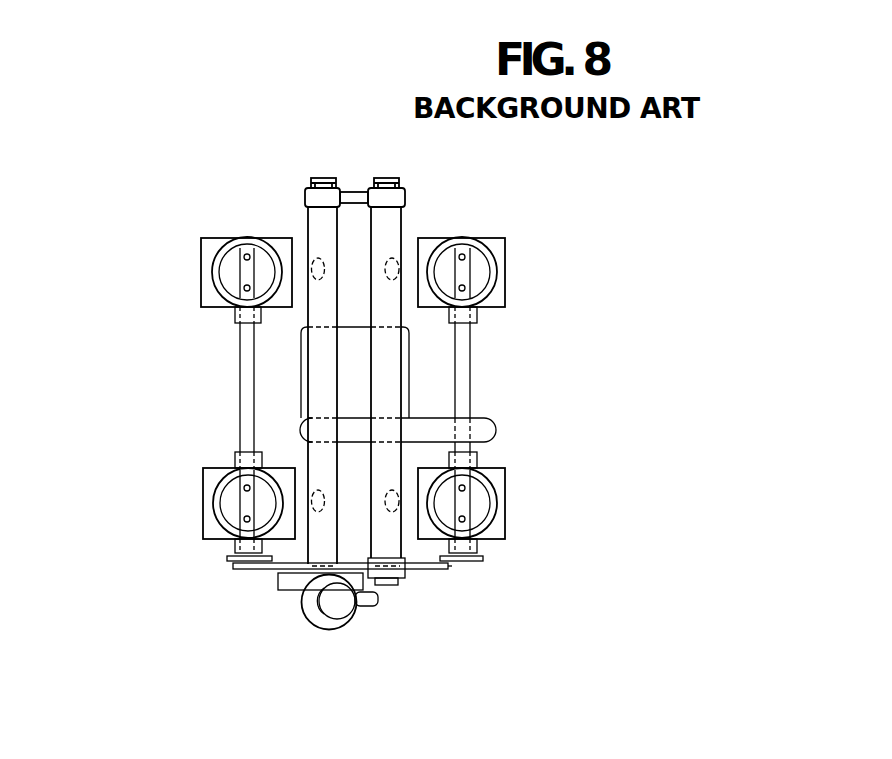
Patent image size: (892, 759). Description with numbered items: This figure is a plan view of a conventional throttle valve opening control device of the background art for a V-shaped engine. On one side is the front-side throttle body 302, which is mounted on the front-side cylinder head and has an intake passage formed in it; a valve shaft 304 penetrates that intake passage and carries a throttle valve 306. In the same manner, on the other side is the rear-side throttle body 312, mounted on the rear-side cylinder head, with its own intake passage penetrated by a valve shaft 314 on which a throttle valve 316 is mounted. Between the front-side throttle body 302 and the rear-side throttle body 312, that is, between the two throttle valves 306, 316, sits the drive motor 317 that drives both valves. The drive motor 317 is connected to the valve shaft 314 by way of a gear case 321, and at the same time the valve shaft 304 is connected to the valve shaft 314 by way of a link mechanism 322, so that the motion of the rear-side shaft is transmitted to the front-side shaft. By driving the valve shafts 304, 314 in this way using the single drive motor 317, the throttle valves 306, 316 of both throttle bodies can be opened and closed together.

The front-side throttle body 302 is at (189, 267).
The valve shaft 304 is at (240, 416).
The throttle valve 306 is at (235, 272).
The rear-side throttle body 312 is at (514, 258).
The valve shaft 314 is at (470, 352).
The throttle valve 316 is at (477, 274).
The drive motor 317 is at (291, 372).
The gear case 321 is at (496, 424).
The link mechanism 322 is at (436, 571).